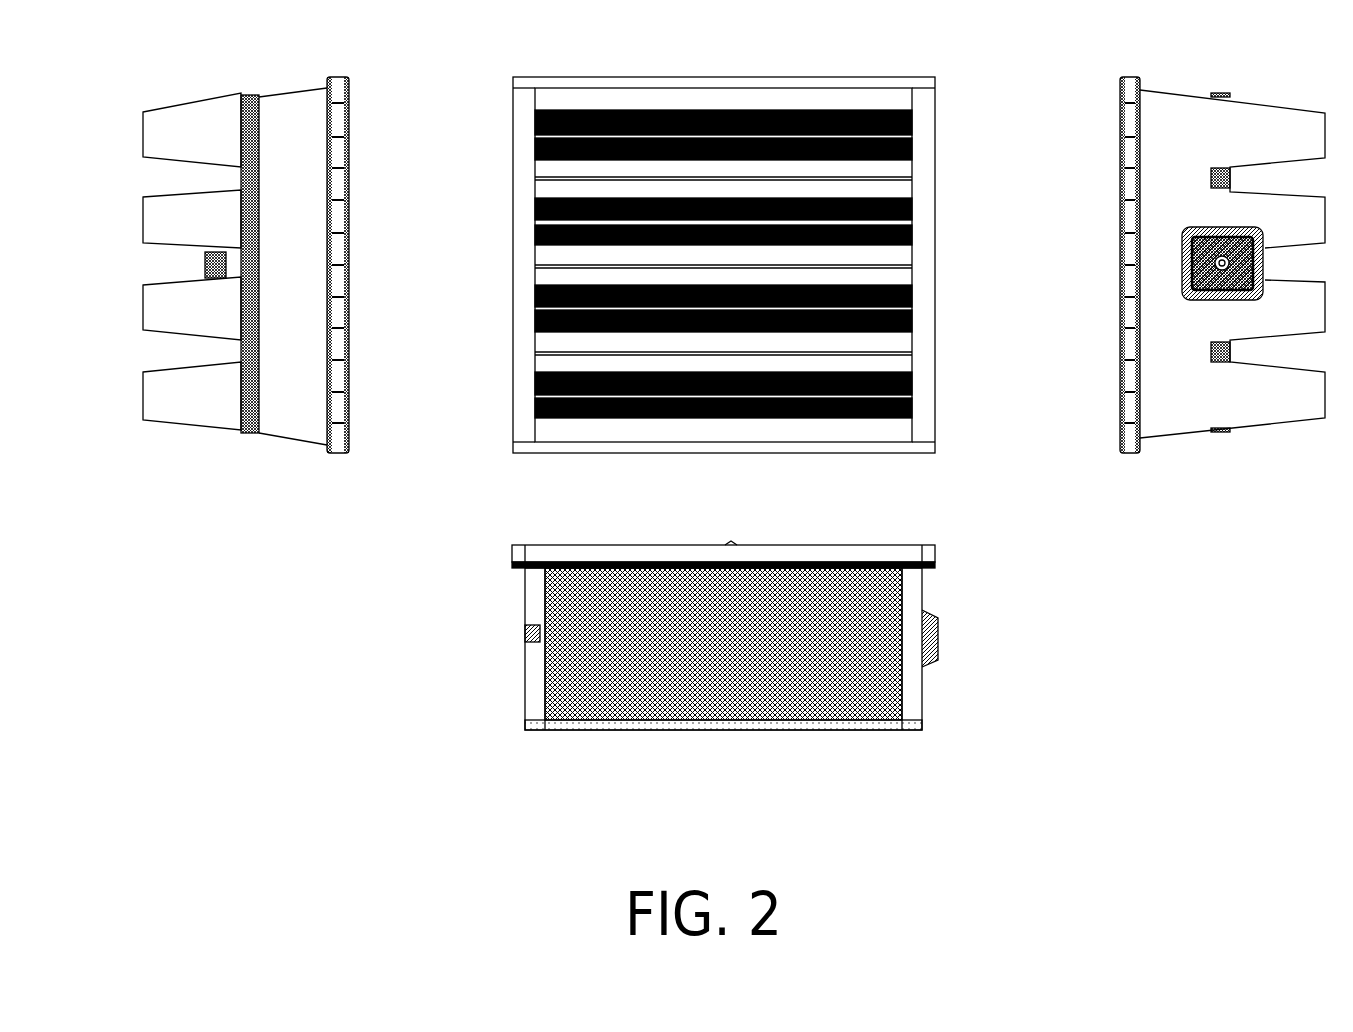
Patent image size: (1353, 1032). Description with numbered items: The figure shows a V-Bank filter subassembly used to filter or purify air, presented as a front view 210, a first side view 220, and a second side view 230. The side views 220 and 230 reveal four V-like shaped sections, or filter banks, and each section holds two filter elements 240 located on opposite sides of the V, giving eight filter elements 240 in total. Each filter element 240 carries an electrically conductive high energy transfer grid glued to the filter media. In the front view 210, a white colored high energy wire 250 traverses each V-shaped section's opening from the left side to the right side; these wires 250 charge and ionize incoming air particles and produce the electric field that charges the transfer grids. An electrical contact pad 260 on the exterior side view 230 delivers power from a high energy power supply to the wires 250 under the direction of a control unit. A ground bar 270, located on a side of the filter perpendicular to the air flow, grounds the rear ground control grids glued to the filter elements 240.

The front view 210 is at (930, 86).
The first side view 220 is at (348, 380).
The second side view 230 is at (1120, 170).
The filter element 240 is at (912, 682).
The high energy wire 250 is at (538, 143).
The electrical contact pad 260 is at (1205, 298).
The ground bar 270 is at (251, 418).